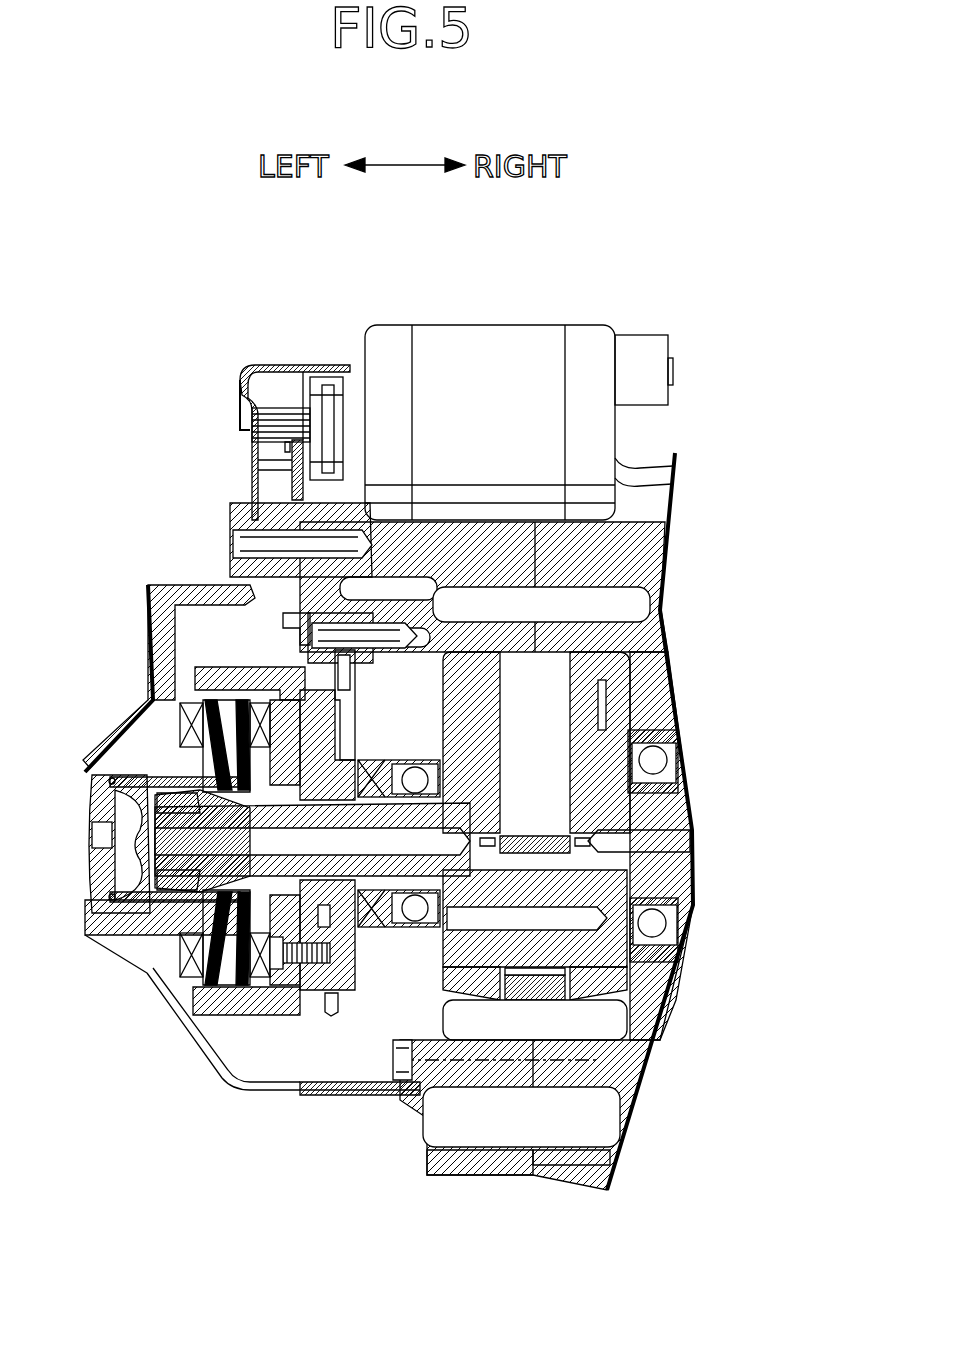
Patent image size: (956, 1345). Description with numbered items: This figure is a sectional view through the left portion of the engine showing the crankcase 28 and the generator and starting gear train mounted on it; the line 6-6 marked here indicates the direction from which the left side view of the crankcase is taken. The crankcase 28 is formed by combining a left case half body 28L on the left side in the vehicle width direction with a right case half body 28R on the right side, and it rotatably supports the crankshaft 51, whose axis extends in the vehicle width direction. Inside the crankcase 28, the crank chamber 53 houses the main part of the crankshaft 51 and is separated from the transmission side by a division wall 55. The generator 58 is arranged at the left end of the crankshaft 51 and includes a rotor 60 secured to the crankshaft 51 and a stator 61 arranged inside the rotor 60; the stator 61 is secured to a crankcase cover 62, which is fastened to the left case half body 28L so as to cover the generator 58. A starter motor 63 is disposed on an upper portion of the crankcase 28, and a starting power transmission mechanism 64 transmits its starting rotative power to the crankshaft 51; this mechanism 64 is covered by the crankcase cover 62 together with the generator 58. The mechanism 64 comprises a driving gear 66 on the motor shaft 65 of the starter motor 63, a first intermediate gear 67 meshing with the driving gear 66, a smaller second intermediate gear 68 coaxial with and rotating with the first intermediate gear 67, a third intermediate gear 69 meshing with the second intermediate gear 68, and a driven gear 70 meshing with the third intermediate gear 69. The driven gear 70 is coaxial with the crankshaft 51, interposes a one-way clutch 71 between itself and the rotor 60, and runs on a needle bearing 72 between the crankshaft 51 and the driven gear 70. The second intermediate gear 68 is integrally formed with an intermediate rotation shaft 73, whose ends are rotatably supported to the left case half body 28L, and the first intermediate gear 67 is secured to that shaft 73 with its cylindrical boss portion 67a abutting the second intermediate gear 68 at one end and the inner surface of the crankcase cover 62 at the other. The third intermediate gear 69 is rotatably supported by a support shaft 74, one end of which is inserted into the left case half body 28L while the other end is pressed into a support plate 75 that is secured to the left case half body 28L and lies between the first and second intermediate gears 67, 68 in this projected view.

The line 6- 6 is at (305, 330).
The crankcase 28 is at (606, 1240).
The left case half body 28L is at (492, 1162).
The right case half body 28R is at (565, 1158).
The crankshaft 51 is at (478, 808).
The crank chamber 53 is at (547, 747).
The division wall 55 is at (593, 1078).
The generator 58 is at (213, 1020).
The rotor 60 is at (220, 677).
The stator 61 is at (185, 955).
The crankcase cover 62 is at (118, 743).
The starter motor 63 is at (504, 413).
The starting power transmission mechanism 64 is at (348, 698).
The motor shaft 65 is at (242, 428).
The driving gear 66 is at (267, 407).
The first intermediate gear 67 is at (292, 460).
The boss portion 67a is at (250, 597).
The second intermediate gear 68 is at (347, 490).
The third intermediate gear 69 is at (343, 603).
The driven gear 70 is at (333, 1012).
The one-way clutch 71 is at (325, 920).
The needle bearing 72 is at (350, 953).
The intermediate rotation shaft 73 is at (233, 517).
The support shaft 74 is at (443, 605).
The support plate 75 is at (297, 618).